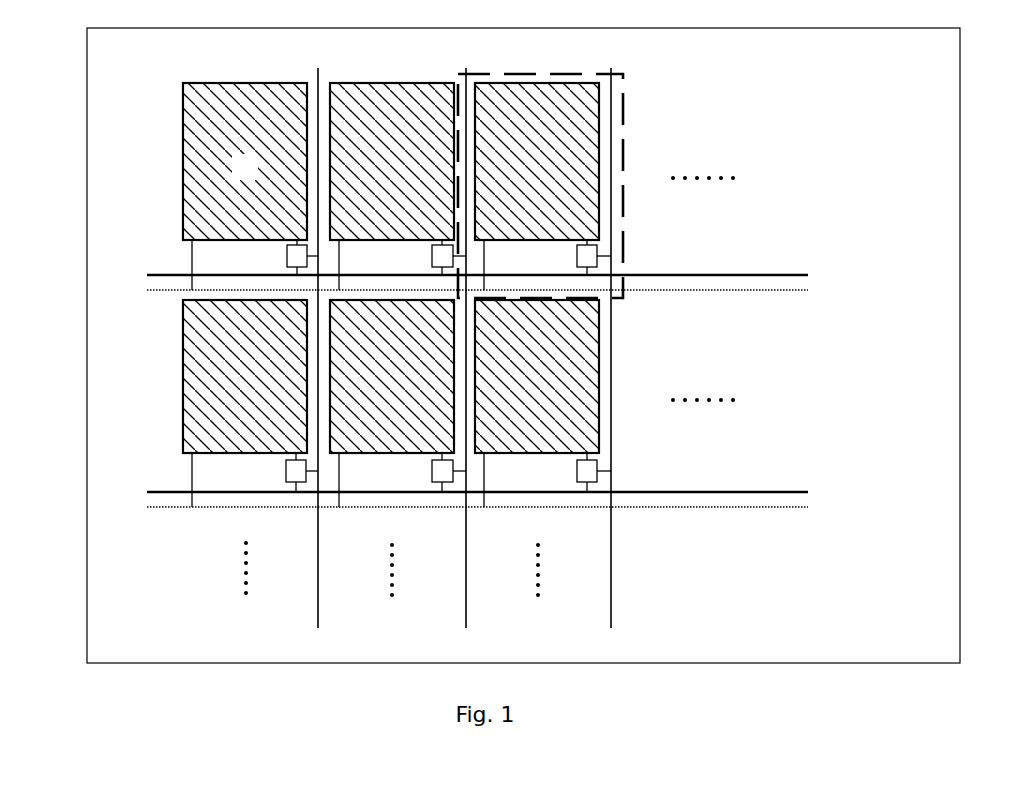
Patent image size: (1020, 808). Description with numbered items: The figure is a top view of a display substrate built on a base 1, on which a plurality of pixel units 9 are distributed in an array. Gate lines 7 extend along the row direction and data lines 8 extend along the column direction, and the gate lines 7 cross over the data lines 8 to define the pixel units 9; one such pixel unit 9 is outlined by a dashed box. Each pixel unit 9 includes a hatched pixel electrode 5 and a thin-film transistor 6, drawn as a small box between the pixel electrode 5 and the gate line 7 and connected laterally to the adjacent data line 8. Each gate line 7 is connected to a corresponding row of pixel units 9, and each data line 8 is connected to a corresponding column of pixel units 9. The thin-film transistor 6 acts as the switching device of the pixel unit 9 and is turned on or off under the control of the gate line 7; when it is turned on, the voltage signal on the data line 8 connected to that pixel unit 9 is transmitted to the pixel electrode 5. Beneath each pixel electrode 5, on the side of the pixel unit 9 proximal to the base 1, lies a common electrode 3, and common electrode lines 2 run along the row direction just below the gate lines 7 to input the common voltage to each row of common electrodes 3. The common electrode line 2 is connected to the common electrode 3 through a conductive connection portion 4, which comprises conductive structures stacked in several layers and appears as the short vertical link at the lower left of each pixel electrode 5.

The base 1 is at (86, 48).
The common electrode line 2 is at (467, 293).
The common electrode 3 is at (183, 240).
The conductive connection portion 4 is at (183, 265).
The pixel electrode 5 is at (245, 161).
The thin-film transistor 6 is at (302, 257).
The gate line 7 is at (467, 268).
The data line 8 is at (320, 337).
The pixel unit 9 is at (622, 129).